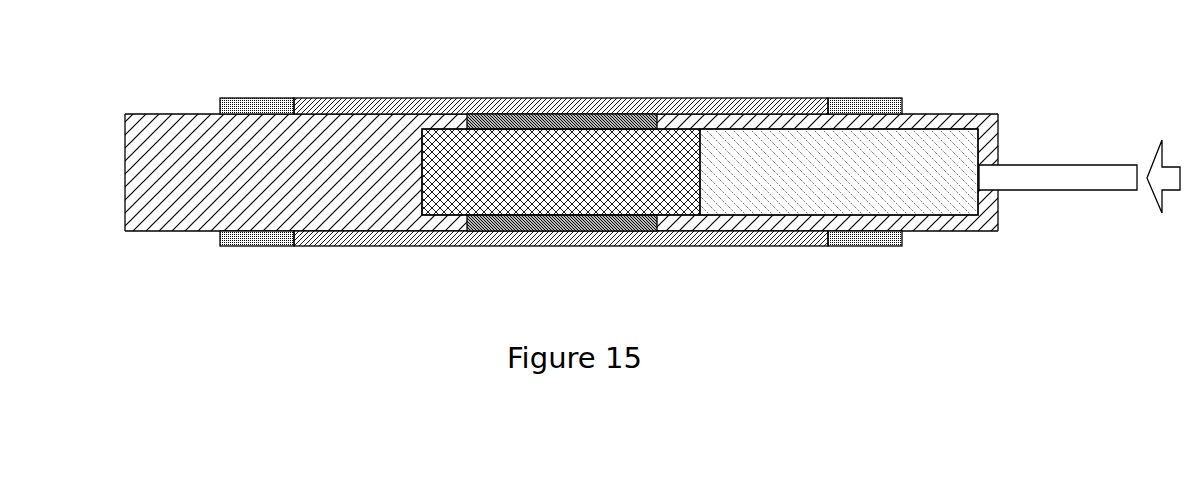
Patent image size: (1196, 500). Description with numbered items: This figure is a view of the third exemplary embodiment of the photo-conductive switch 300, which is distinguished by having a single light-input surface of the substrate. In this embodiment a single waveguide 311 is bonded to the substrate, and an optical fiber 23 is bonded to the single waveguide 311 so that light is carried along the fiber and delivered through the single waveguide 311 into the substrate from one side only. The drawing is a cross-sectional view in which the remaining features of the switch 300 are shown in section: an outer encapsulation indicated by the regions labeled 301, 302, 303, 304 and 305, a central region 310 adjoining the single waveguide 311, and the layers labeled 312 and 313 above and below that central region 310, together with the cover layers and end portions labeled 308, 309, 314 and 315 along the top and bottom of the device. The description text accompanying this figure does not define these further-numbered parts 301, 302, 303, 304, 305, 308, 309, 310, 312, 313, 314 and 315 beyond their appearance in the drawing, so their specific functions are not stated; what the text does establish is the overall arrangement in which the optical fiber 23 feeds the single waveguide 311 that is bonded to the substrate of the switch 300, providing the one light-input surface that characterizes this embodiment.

The photo-conductive switch 300 is at (757, 55).
The housing 301 is at (964, 106).
The top wall of housing 302 is at (175, 113).
The bottom wall of housing 303 is at (195, 233).
The end wall of housing 304 is at (999, 207).
The end wall of housing 305 is at (124, 160).
The top cover layer 308 is at (517, 98).
The top seal 309 is at (868, 98).
The active element 310 is at (578, 181).
The single waveguide 311 is at (857, 188).
The top electrode 312 is at (580, 113).
The bottom electrode 313 is at (582, 228).
The bottom cover layer 314 is at (518, 246).
The bottom seal 315 is at (873, 246).
The optical fiber 23 is at (1047, 163).